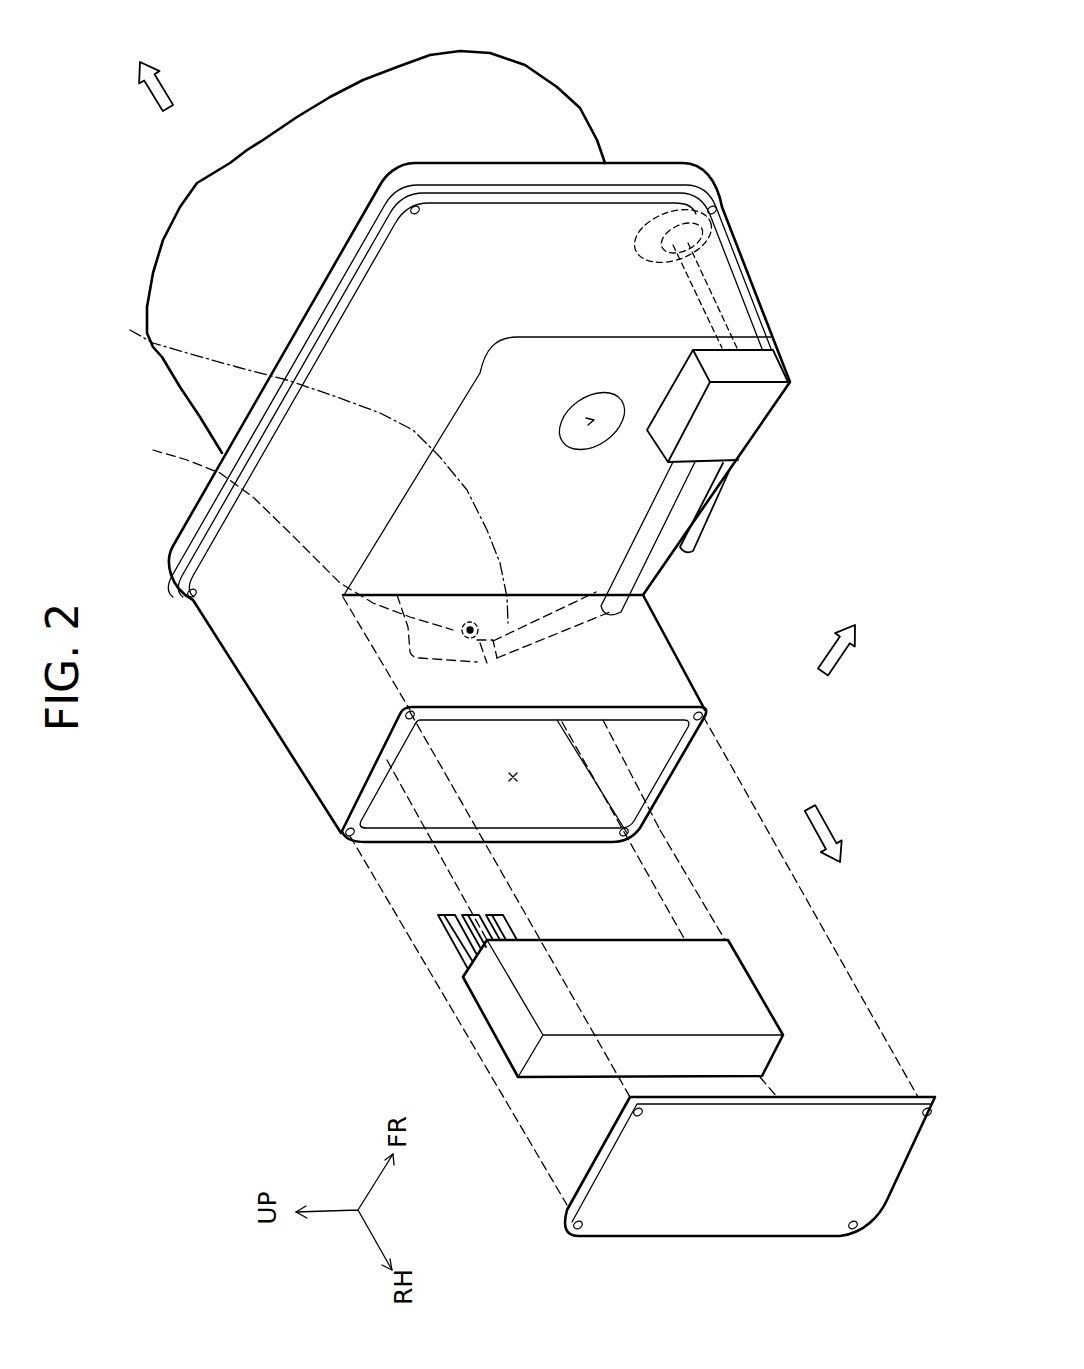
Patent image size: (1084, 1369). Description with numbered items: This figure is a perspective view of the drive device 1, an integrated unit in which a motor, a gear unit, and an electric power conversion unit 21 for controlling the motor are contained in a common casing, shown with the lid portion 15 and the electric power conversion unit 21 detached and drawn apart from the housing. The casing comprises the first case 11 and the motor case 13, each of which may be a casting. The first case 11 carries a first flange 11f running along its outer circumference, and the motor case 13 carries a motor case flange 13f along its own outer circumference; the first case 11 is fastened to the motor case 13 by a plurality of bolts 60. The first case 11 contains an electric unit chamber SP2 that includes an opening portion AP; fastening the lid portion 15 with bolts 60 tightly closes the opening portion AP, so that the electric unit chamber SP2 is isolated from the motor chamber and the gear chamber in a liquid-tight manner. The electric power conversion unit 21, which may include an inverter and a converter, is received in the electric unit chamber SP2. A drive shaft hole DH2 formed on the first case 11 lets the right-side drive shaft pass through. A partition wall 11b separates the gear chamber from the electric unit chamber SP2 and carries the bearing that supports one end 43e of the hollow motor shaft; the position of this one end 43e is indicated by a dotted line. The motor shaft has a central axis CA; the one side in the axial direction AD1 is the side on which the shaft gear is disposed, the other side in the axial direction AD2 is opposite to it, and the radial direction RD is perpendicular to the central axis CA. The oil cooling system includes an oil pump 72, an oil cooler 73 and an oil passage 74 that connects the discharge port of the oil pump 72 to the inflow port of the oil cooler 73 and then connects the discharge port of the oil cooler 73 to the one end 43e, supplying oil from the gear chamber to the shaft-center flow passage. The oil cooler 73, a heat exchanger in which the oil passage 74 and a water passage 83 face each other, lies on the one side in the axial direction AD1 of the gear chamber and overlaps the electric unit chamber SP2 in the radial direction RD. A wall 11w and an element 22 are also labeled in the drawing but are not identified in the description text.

The drive device 1 is at (153, 1122).
The first case 11 is at (451, 718).
The partition wall 11b is at (304, 462).
The first flange 11f is at (452, 359).
The wall of housing 11w is at (564, 516).
The motor case 13 is at (376, 252).
The motor case flange 13f is at (443, 498).
The lid portion 15 is at (656, 974).
The electric power conversion unit 21 is at (616, 909).
The terminal pins 22 is at (429, 972).
The one end of the motor shaft 43e is at (370, 543).
The bolts 60 is at (485, 353).
The oil pump 72 is at (734, 236).
The oil cooler 73 is at (759, 406).
The oil passage 74 is at (734, 429).
The water passage 83 is at (746, 507).
The opening portion AP is at (463, 822).
The central axis CA is at (474, 614).
The drive shaft hole DH2 is at (711, 391).
The electric unit chamber SP2 is at (621, 801).
The one side in the axial direction AD1 is at (849, 820).
The other side in the axial direction AD2 is at (127, 105).
The radial direction RD is at (869, 650).